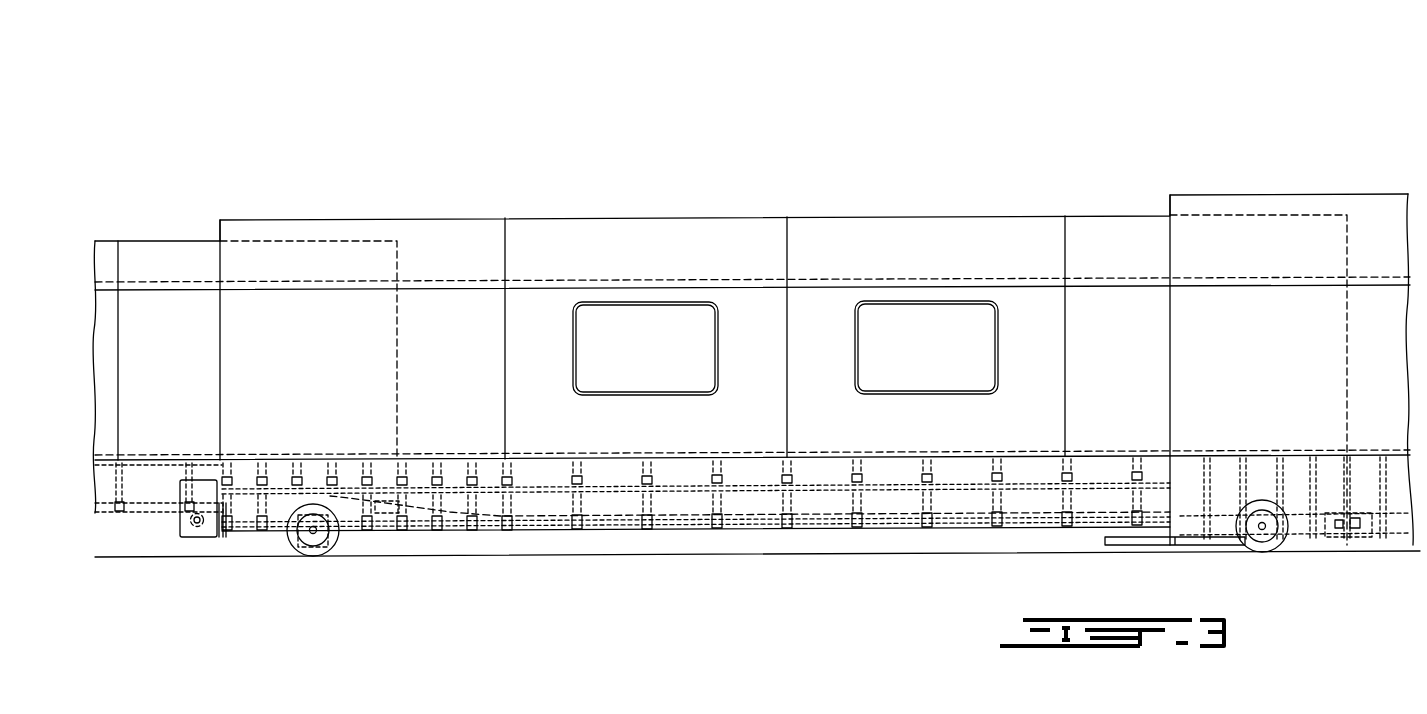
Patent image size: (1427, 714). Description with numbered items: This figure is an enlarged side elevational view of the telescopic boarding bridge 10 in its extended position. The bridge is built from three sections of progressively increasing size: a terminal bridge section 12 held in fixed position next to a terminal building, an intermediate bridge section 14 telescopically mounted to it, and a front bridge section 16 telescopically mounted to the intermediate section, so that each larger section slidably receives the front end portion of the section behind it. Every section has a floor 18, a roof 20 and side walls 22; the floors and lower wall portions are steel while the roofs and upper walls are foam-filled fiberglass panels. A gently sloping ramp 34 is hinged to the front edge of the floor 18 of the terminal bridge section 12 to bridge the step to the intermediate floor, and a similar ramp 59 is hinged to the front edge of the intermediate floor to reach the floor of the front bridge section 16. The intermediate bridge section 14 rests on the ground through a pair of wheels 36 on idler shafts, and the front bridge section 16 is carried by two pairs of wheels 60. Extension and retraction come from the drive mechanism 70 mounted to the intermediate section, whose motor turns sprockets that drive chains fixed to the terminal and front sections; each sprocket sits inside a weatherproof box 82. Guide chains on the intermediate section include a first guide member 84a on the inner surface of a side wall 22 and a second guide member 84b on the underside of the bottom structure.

The telescopic boarding bridge 10 is at (562, 162).
The terminal bridge section 12 is at (137, 240).
The intermediate bridge section 14 is at (313, 218).
The front bridge section 16 is at (1292, 194).
The floor 18 is at (545, 513).
The roof 20 is at (185, 241).
The side walls 22 is at (181, 400).
The ramp 34 is at (460, 517).
The wheels 36 is at (333, 541).
The ramp 59 is at (1367, 537).
The wheels 60 is at (1260, 552).
The drive mechanism 70 is at (197, 541).
The weatherproof box 82 is at (181, 522).
The first guide member 84a is at (467, 492).
The second guide member 84b is at (417, 533).